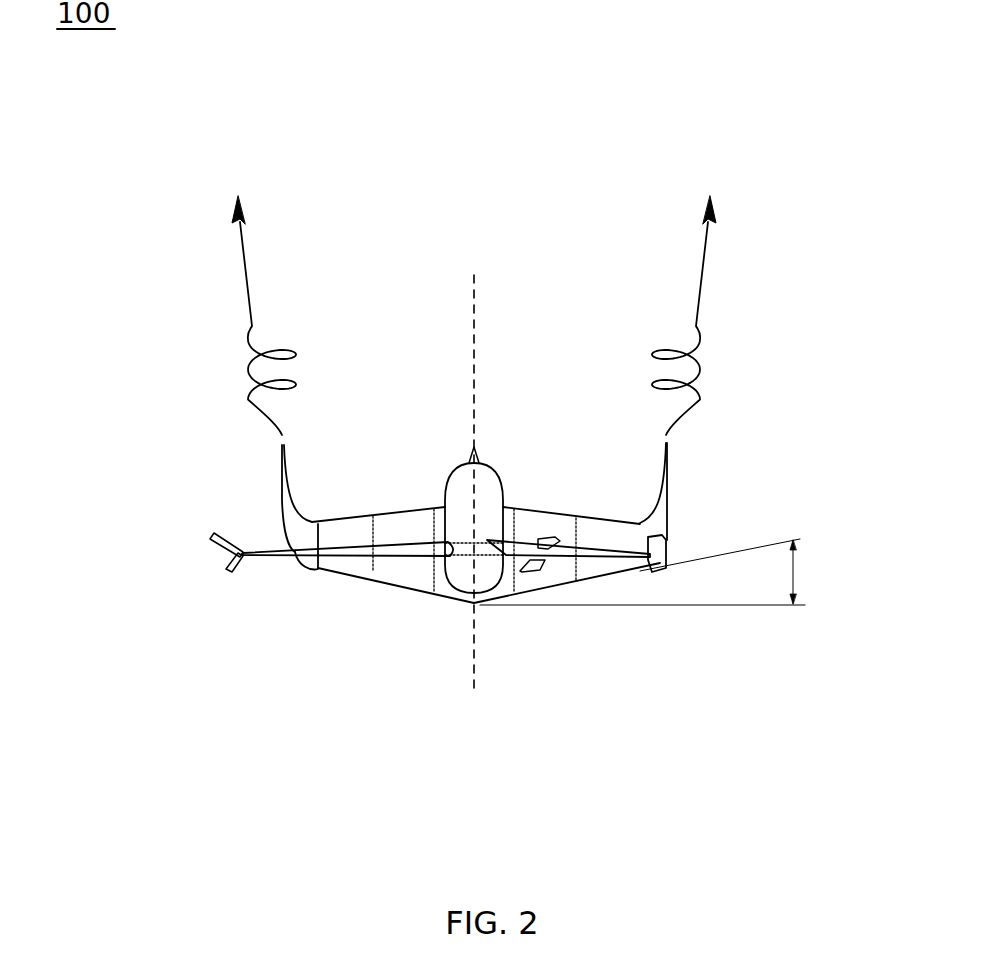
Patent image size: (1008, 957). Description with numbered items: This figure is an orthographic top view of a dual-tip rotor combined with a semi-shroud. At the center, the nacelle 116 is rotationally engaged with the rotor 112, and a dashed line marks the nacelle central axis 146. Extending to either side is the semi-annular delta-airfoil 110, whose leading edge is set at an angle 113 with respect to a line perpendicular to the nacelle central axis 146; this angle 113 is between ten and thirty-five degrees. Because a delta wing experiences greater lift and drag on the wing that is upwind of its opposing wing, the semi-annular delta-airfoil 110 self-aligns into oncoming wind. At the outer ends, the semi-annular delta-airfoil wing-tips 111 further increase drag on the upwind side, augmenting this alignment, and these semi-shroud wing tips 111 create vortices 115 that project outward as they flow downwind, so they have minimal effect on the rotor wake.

The semi-annular delta-airfoil 110 is at (407, 570).
The semi-annular delta-airfoil wing-tips 111 is at (663, 503).
The rotor 112 is at (382, 548).
The angle 113 is at (795, 586).
The vortices 115 is at (250, 307).
The nacelle 116 is at (480, 490).
The nacelle central axis 146 is at (473, 657).